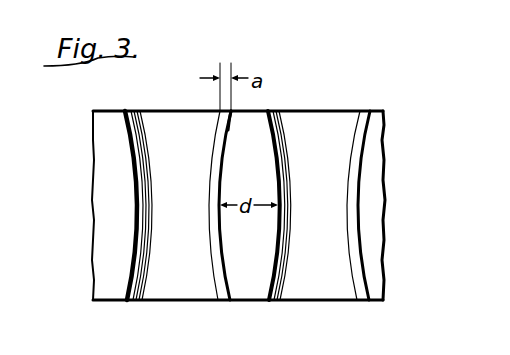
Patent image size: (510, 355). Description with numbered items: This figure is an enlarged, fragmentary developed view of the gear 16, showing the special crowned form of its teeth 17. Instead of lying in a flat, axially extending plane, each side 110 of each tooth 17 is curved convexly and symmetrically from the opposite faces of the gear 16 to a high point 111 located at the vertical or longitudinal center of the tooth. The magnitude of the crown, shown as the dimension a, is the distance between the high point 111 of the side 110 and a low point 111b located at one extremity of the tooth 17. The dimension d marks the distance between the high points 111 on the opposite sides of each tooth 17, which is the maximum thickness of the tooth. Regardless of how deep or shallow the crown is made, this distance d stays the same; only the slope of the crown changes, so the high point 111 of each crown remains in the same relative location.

The gear 16 is at (90, 136).
The tooth 17 is at (103, 190).
The side of tooth 110 is at (215, 133).
The high point 111 is at (218, 206).
The low point 111b is at (231, 112).